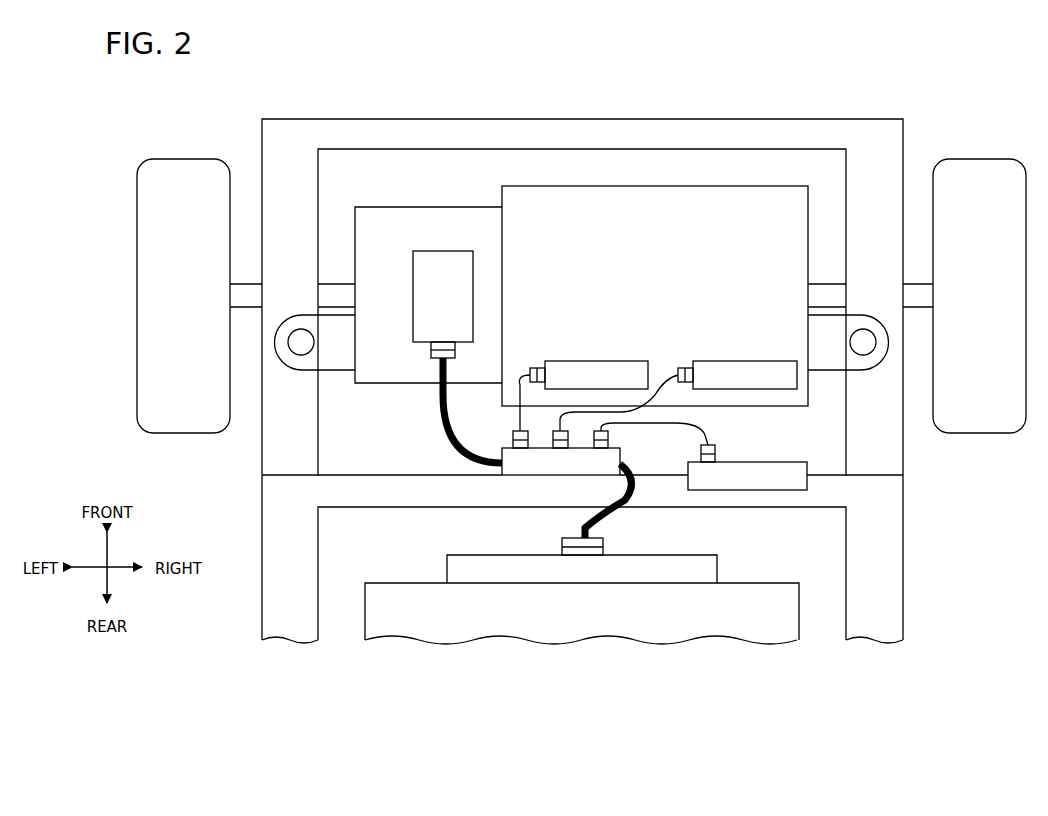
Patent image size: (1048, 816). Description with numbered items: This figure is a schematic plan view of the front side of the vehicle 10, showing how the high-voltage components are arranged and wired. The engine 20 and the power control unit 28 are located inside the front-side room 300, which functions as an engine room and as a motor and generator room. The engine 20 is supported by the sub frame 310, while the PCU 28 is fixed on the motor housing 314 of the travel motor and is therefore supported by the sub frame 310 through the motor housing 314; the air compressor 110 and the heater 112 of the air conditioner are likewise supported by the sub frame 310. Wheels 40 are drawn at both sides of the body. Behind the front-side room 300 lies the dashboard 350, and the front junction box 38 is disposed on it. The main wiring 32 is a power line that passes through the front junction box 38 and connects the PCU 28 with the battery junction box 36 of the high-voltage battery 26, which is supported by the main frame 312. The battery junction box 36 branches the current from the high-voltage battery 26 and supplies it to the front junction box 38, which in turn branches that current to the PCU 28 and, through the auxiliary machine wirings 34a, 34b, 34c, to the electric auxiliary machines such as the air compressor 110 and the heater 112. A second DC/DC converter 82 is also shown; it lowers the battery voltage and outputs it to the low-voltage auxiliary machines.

The vehicle 10 is at (972, 80).
The engine 20 is at (692, 186).
The high-voltage battery 26 is at (403, 583).
The power control unit 28 is at (412, 276).
The main wiring 32 is at (440, 416).
The auxiliary machine wiring 34a is at (659, 390).
The auxiliary machine wiring 34b is at (516, 372).
The auxiliary machine wiring 34c is at (700, 424).
The battery junction box 36 is at (712, 567).
The front junction box 38 is at (501, 456).
The wheel 40 is at (170, 168).
The second DC/DC converter 82 is at (783, 462).
The air compressor 110 is at (768, 361).
The heater 112 is at (616, 361).
The front-side room 300 is at (781, 174).
The sub frame 310 is at (349, 127).
The main frame 312 is at (268, 498).
The motor housing 314 is at (393, 207).
The dashboard 350 is at (820, 498).